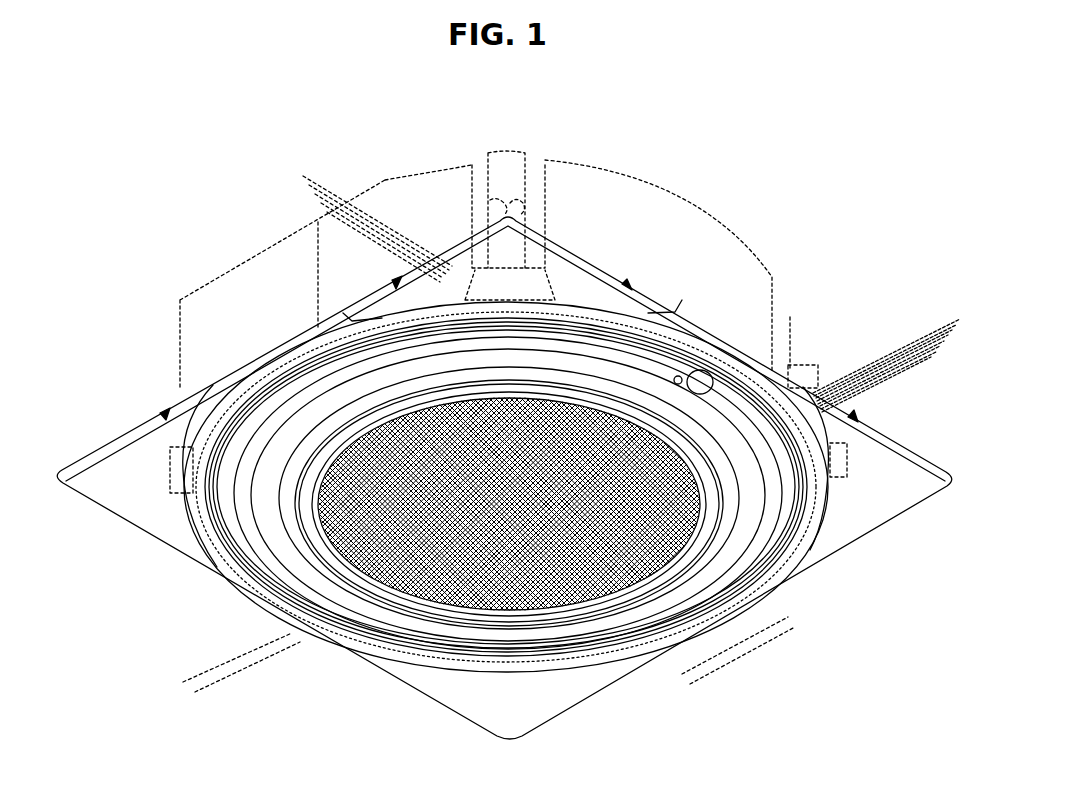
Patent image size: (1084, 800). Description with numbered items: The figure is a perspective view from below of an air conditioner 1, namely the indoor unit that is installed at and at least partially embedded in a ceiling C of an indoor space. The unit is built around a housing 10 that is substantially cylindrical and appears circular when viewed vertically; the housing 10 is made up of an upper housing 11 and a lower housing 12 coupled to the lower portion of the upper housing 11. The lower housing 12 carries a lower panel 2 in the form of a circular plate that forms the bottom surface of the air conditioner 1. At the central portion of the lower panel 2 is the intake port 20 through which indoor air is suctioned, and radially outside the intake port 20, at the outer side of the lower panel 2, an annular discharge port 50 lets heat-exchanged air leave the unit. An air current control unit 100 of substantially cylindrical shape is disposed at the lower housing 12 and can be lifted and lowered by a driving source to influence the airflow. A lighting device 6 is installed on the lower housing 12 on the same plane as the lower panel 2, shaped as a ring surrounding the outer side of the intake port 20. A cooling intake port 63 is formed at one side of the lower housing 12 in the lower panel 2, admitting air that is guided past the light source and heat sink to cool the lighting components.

The air conditioner 1 is at (430, 101).
The lower panel 2 is at (632, 592).
The lighting device 6 is at (703, 561).
The housing 10 is at (695, 206).
The upper housing 11 is at (787, 322).
The lower housing 12 is at (830, 473).
The intake port 20 is at (422, 570).
The discharge port 50 is at (820, 488).
The cooling intake port 63 is at (299, 552).
The air current control unit 100 is at (274, 545).
The ceiling C is at (892, 370).